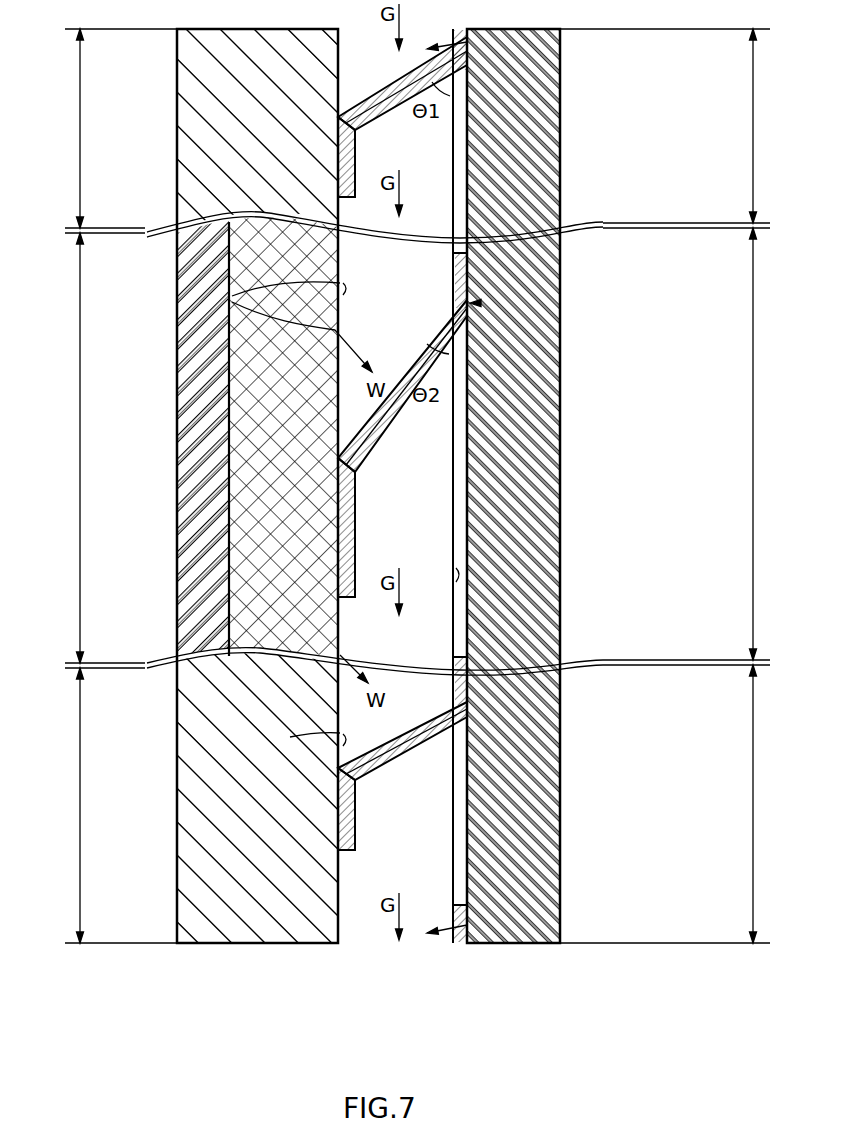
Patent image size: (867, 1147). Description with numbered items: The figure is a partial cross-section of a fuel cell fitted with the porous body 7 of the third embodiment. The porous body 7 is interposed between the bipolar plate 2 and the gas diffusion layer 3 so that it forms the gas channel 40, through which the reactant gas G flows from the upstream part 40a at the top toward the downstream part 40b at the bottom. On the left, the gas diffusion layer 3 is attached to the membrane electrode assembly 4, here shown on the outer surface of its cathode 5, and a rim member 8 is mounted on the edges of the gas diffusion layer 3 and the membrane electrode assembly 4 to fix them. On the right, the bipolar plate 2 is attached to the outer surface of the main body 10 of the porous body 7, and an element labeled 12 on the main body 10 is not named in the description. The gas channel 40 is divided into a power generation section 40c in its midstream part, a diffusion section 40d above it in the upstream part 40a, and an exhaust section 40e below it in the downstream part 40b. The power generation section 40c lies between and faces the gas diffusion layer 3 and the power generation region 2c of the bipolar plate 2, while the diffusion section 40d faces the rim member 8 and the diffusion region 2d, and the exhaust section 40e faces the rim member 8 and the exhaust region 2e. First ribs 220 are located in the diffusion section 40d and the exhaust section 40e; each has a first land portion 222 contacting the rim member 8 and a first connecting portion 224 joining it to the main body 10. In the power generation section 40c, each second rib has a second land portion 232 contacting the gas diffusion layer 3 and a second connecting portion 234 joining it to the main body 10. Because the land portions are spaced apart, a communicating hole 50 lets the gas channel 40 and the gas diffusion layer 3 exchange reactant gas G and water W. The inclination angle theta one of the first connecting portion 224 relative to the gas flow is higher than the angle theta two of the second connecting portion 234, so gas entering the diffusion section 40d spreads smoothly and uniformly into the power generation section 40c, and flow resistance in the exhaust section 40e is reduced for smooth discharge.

The bipolar plate 2 is at (547, 190).
The gas diffusion layer 3 is at (228, 524).
The membrane electrode assembly 4 is at (165, 362).
The cathode 5 is at (188, 434).
The porous body 7 is at (481, 302).
The rim member 8 is at (190, 112).
The main body 10 is at (470, 268).
The plate wall 12 is at (460, 578).
The gas channel 40 is at (410, 845).
The upstream part 40a is at (467, 42).
The downstream part 40b is at (467, 925).
The communicating hole 50 is at (232, 296).
The first ribs 220 is at (526, 117).
The first land portion 222 is at (355, 157).
The first connecting portion 224 is at (380, 113).
The second land portion 232 is at (355, 530).
The second connecting portion 234 is at (370, 450).
The power generation section 40c is at (58, 448).
The diffusion section 40d is at (58, 128).
The exhaust section 40e is at (58, 805).
The power generation region 2c is at (770, 444).
The diffusion region 2d is at (770, 126).
The exhaust region 2e is at (770, 804).